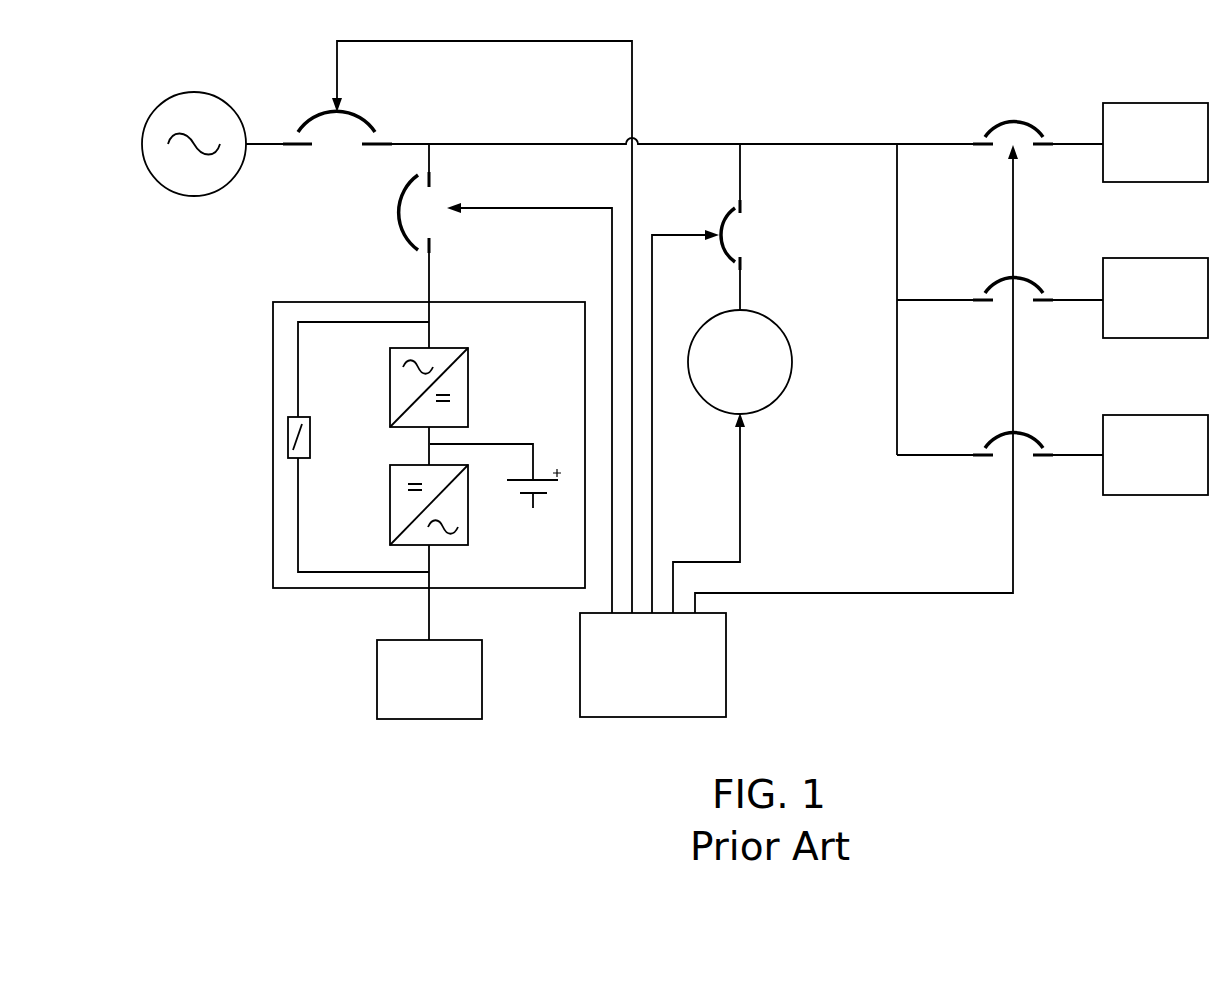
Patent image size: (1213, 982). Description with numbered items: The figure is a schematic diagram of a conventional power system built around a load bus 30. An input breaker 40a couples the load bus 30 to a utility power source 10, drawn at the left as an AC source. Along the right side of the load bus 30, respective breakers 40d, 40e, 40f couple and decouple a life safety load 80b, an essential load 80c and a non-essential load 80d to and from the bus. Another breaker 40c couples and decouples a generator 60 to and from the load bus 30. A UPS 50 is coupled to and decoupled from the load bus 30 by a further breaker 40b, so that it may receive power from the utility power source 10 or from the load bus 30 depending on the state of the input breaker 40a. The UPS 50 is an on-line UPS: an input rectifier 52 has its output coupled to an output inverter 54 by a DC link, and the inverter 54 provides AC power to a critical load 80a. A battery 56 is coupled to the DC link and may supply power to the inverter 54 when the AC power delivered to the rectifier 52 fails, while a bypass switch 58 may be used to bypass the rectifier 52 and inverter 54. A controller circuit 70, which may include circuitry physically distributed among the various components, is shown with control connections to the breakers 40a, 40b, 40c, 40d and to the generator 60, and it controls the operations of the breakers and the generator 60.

The utility power source 10 is at (193, 196).
The load bus 30 is at (705, 142).
The input breaker 40a is at (394, 112).
The breaker 40b is at (371, 230).
The breaker 40c is at (779, 226).
The breaker 40d is at (967, 102).
The breaker 40e is at (970, 263).
The breaker 40f is at (978, 416).
The UPS 50 is at (457, 302).
The input rectifier 52 is at (467, 385).
The output inverter 54 is at (388, 507).
The battery 56 is at (507, 536).
The bypass switch 58 is at (307, 437).
The generator 60 is at (793, 362).
The controller circuit 70 is at (728, 665).
The critical load 80a is at (485, 678).
The life safety load 80b is at (1153, 102).
The essential load 80c is at (1153, 258).
The non-essential load 80d is at (1153, 415).